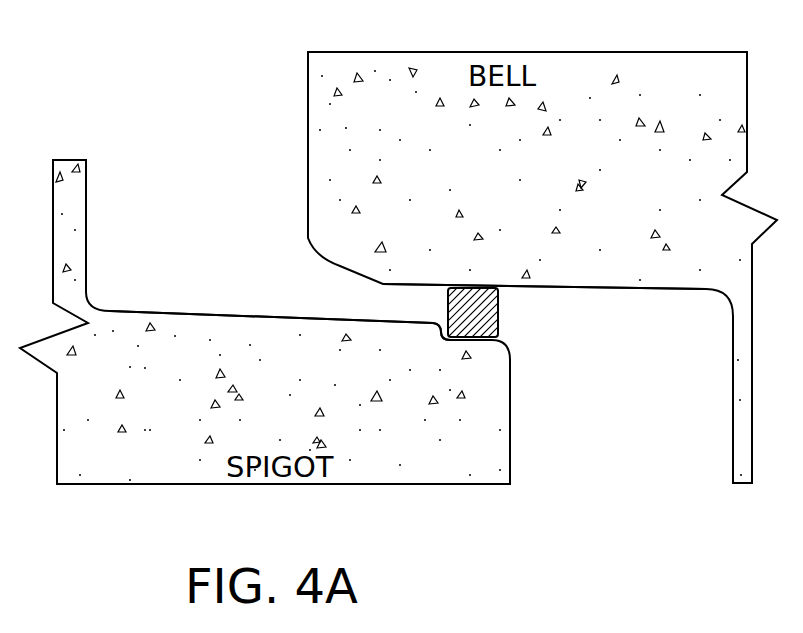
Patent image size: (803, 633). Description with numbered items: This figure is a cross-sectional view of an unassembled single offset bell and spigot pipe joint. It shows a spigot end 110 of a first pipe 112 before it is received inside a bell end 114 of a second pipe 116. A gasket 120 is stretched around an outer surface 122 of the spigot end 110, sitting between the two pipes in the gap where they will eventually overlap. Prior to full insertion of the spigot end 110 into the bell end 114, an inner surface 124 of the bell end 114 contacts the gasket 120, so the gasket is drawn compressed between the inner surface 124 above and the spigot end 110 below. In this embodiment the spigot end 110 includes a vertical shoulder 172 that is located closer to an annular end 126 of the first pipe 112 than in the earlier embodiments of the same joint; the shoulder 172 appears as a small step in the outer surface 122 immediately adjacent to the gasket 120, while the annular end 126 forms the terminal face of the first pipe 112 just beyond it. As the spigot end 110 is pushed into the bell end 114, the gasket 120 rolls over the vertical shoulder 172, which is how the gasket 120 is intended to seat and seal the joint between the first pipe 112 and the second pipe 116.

The spigot end 110 is at (361, 473).
The first pipe 112 is at (74, 474).
The bell end 114 is at (440, 68).
The second pipe 116 is at (643, 68).
The gasket 120 is at (503, 315).
The outer surface 122 is at (208, 312).
The inner surface 124 is at (623, 290).
The annular end 126 is at (512, 402).
The vertical shoulder 172 is at (438, 322).